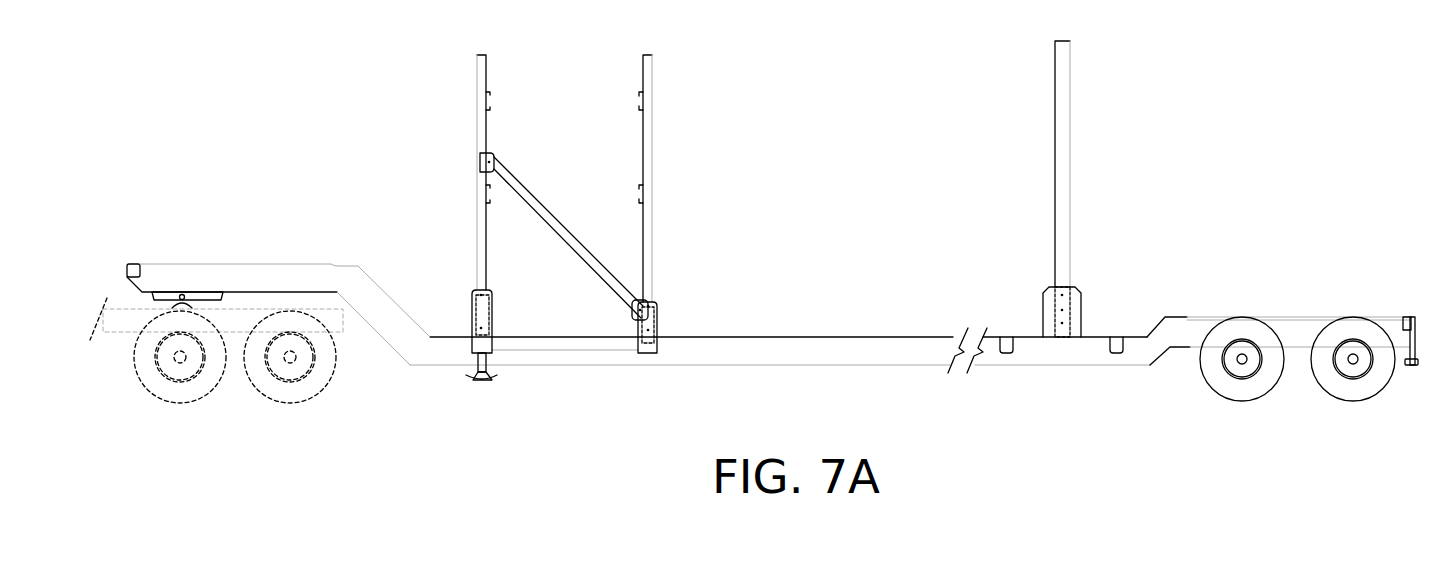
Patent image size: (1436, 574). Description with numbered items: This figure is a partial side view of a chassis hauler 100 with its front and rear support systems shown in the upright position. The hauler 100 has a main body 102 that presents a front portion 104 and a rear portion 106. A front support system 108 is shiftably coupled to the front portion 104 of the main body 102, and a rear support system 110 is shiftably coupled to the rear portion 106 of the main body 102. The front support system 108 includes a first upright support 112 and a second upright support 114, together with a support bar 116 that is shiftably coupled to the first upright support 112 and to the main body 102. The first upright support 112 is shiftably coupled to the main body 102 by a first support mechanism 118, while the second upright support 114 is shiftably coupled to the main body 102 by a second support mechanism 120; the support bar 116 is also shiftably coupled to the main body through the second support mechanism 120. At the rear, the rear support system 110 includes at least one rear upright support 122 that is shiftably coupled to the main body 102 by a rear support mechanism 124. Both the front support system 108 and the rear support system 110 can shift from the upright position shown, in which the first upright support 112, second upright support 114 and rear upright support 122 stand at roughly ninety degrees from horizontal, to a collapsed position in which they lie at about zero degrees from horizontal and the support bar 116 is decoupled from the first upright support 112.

The hauler 100 is at (851, 86).
The main body 102 is at (815, 338).
The front portion 104 is at (427, 403).
The rear portion 106 is at (1130, 404).
The front support system 108 is at (440, 76).
The rear support system 110 is at (1118, 77).
The first upright support 112 is at (486, 72).
The second upright support 114 is at (652, 72).
The support bar 116 is at (548, 213).
The first support mechanism 118 is at (472, 310).
The second support mechanism 120 is at (657, 310).
The rear upright support 122 is at (1055, 72).
The rear support mechanism 124 is at (1043, 312).